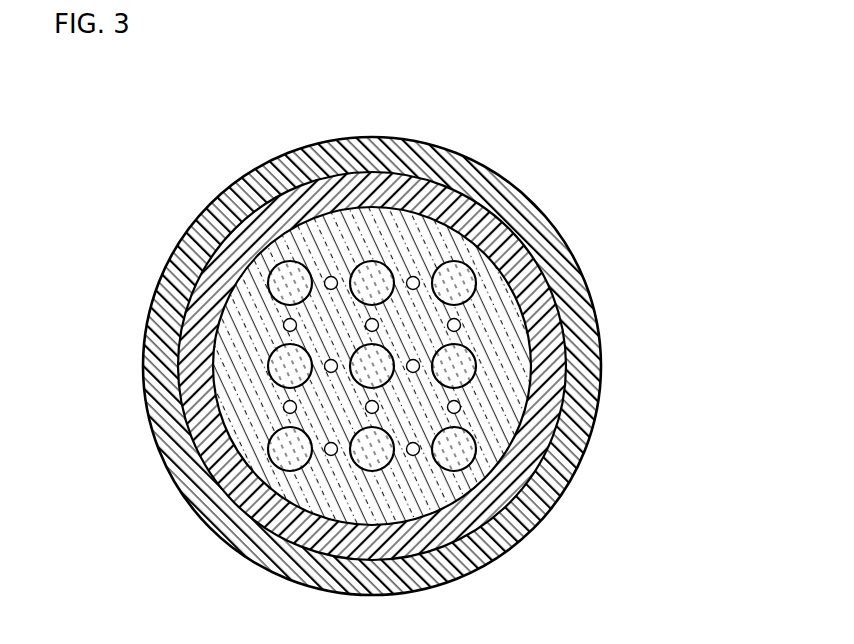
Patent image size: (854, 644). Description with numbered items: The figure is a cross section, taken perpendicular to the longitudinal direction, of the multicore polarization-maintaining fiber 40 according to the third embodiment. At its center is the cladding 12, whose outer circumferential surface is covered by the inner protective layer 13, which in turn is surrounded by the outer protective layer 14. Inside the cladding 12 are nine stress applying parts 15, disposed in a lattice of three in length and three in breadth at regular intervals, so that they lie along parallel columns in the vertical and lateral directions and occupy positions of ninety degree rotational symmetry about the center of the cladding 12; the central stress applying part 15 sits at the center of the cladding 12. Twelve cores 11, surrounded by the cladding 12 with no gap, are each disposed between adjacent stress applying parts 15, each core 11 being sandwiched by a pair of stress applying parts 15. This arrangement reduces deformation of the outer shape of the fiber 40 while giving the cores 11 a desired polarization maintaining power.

The core 11 is at (462, 367).
The cladding 12 is at (393, 240).
The inner protective layer 13 is at (550, 367).
The outer protective layer 14 is at (587, 371).
The stress applying part 15 is at (450, 286).
The multicore polarization-maintaining fiber 40 is at (645, 195).